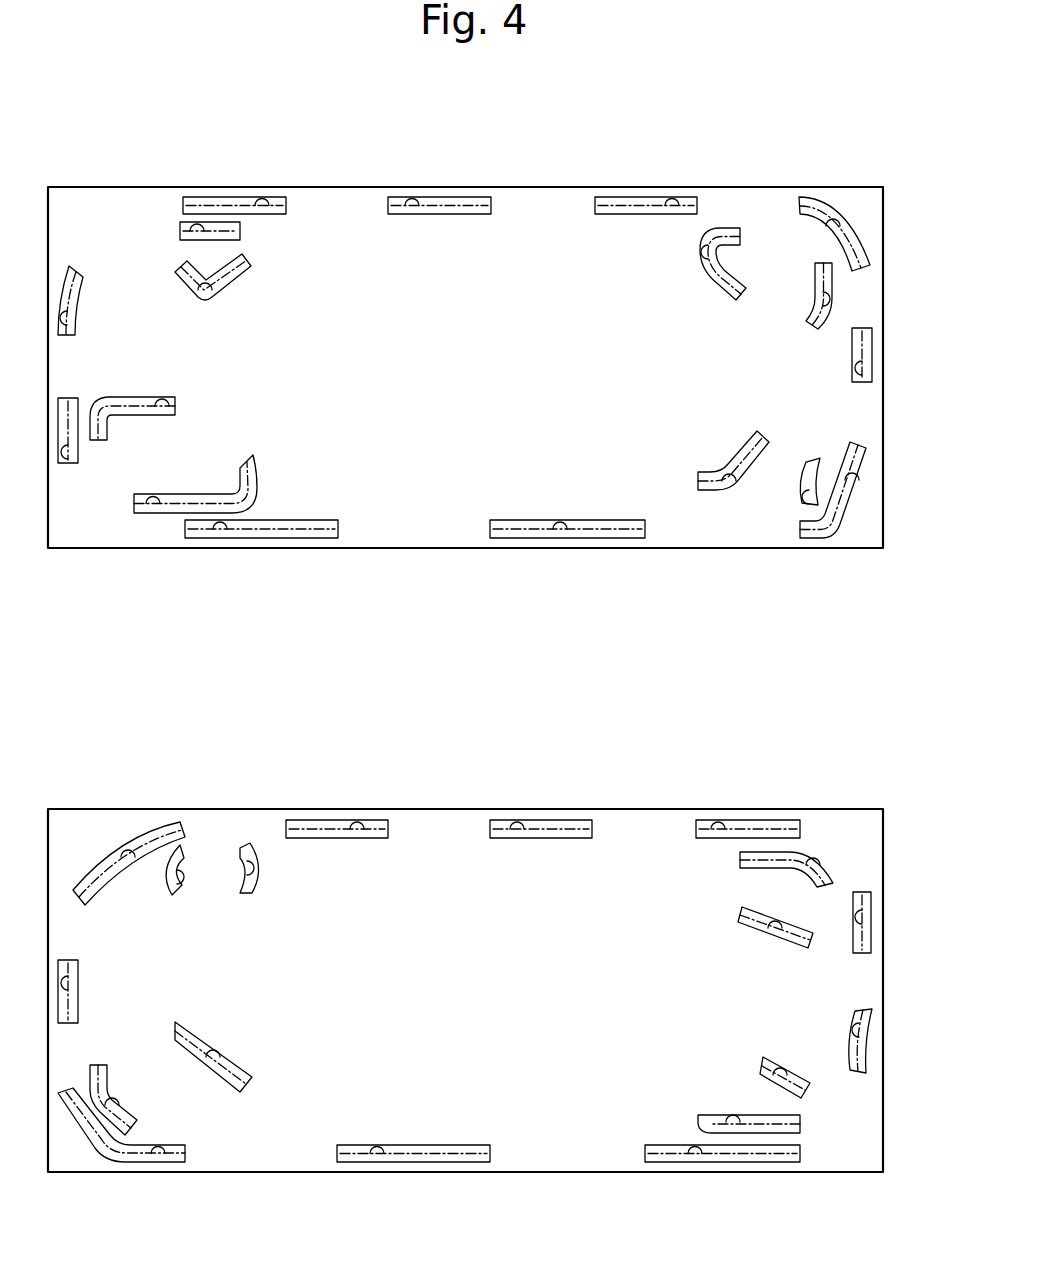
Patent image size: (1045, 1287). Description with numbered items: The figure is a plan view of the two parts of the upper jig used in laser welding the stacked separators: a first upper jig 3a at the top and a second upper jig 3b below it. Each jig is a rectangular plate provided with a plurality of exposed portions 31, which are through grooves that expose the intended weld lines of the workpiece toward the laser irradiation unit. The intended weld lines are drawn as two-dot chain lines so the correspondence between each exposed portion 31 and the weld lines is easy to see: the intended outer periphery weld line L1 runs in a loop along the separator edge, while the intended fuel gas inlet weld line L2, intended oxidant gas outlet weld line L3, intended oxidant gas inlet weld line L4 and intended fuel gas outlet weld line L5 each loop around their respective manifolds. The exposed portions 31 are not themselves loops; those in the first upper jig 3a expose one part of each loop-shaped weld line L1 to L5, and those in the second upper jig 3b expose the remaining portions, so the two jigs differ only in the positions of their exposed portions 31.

The first upper jig 3a is at (530, 187).
The second upper jig 3b is at (415, 809).
The exposed portion 31 is at (262, 198).
The intended outer periphery weld line L1 is at (186, 196).
The intended fuel gas inlet weld line L2 is at (818, 280).
The intended oxidant gas outlet weld line L3 is at (743, 432).
The intended oxidant gas inlet weld line L4 is at (240, 238).
The intended fuel gas outlet weld line L5 is at (140, 395).